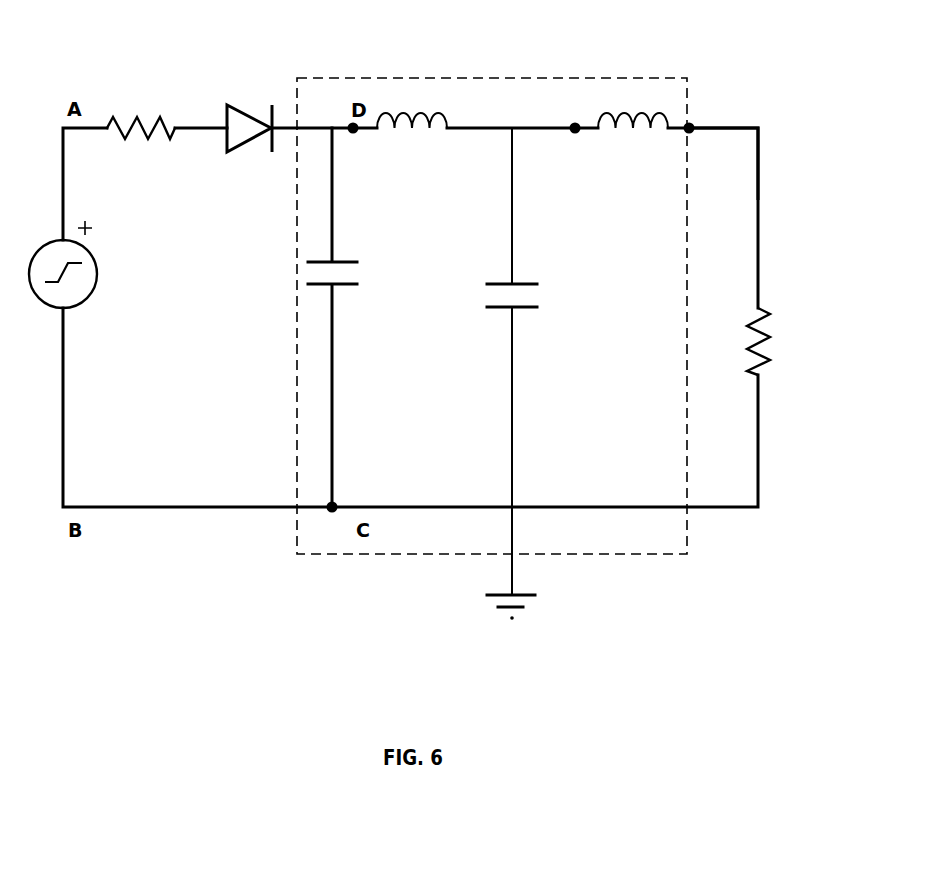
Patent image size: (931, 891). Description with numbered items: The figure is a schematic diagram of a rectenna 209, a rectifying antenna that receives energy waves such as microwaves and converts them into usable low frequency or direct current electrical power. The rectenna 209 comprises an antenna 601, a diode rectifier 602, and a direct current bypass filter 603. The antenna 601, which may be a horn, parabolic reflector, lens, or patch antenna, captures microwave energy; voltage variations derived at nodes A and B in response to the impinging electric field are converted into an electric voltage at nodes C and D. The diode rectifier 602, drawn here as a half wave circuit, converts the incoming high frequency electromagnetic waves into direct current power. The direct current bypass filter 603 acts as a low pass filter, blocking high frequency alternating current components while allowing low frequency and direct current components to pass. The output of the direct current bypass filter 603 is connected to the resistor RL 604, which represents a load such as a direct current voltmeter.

The antenna 601 is at (100, 280).
The diode rectifier 602 is at (240, 110).
The DC bypass filter 603 is at (577, 78).
The resistor RL 604 is at (765, 312).
The rectenna 209 is at (730, 93).